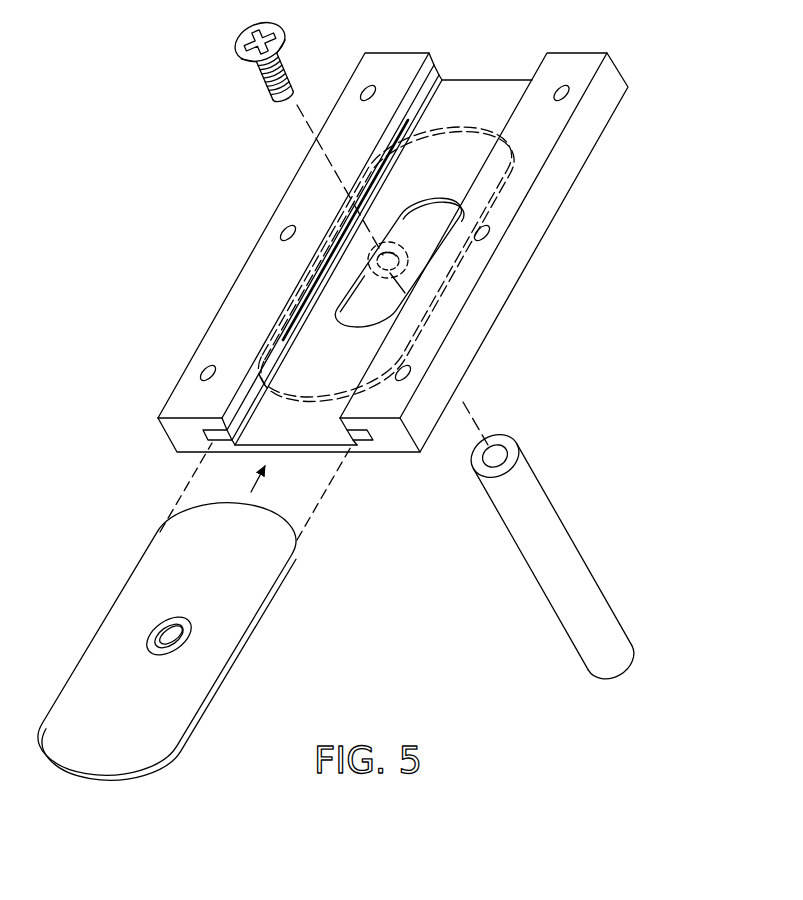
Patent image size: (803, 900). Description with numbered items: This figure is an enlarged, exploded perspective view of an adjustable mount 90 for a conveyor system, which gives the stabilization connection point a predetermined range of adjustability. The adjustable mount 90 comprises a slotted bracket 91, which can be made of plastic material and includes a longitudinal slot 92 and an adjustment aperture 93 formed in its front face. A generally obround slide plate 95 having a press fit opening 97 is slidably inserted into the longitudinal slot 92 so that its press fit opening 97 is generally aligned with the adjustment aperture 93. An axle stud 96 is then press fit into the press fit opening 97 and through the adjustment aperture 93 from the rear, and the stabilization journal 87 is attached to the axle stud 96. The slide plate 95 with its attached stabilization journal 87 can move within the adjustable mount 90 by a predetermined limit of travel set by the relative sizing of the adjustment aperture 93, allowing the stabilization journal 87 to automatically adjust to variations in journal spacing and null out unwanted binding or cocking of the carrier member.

The stabilization journal 87 is at (557, 515).
The adjustable mount 90 is at (235, 211).
The slotted bracket 91 is at (342, 104).
The longitudinal slot 92 is at (218, 443).
The adjustment aperture 93 is at (418, 203).
The slide plate 95 is at (185, 616).
The axle stud 96 is at (248, 70).
The press fit opening 97 is at (156, 655).